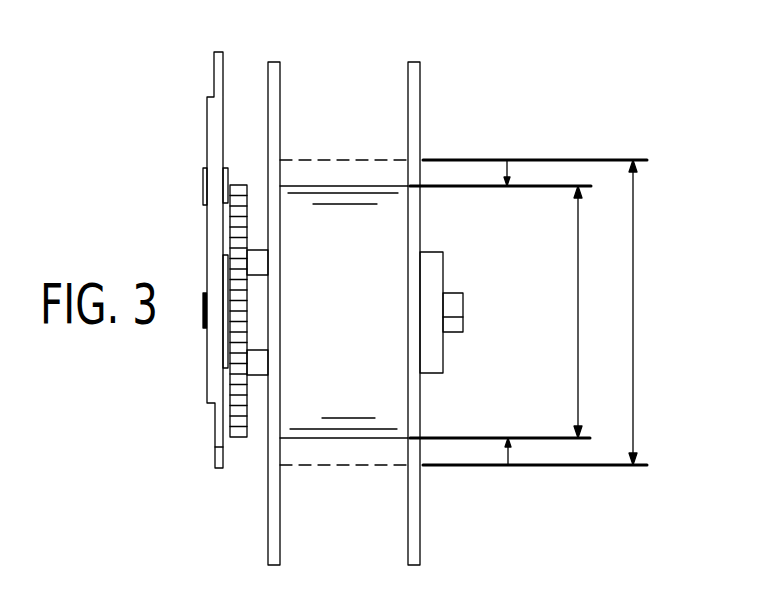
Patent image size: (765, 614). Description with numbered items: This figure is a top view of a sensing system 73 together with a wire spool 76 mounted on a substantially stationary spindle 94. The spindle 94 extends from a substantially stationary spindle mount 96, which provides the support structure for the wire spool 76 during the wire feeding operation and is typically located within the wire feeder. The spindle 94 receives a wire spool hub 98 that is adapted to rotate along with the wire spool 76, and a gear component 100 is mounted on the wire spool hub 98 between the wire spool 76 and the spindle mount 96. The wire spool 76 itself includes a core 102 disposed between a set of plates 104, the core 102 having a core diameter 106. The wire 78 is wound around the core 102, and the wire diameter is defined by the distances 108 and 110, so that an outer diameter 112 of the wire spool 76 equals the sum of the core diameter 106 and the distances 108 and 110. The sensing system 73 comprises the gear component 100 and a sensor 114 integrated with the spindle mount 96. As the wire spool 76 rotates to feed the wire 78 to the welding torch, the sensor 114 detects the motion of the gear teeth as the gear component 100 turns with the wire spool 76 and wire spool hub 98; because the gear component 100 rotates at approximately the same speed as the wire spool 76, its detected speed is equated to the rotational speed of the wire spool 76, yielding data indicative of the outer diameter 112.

The sensing system 73 is at (237, 90).
The wire spool 76 is at (463, 103).
The wire 78 is at (343, 160).
The spindle 94 is at (463, 317).
The spindle mount 96 is at (213, 107).
The wire spool hub 98 is at (432, 258).
The gear component 100 is at (240, 188).
The core 102 is at (395, 223).
The plates 104 is at (273, 72).
The core diameter 106 is at (578, 312).
The wire diameter distance 108 is at (509, 176).
The wire diameter distance 110 is at (509, 445).
The outer diameter 112 is at (633, 312).
The sensor 114 is at (203, 185).